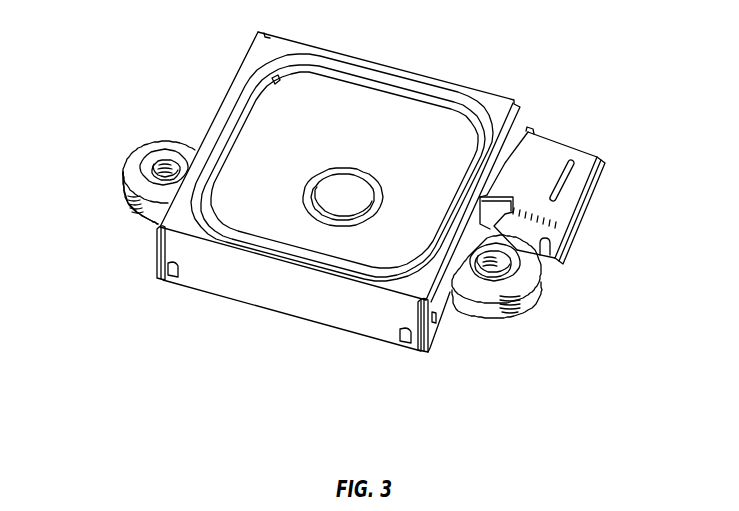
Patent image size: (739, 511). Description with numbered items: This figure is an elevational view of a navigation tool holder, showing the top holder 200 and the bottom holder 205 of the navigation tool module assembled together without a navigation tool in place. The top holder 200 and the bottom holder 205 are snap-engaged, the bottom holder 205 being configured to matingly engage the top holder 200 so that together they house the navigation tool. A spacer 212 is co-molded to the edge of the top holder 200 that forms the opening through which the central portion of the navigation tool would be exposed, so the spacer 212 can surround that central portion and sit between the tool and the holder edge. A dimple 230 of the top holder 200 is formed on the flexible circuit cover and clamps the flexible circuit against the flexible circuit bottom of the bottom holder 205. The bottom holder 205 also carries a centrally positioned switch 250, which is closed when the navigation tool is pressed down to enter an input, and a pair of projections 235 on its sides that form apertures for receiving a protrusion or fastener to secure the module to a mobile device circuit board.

The top holder 200 is at (267, 288).
The bottom holder 205 is at (126, 199).
The spacer 212 is at (247, 97).
The dimple 230 is at (573, 162).
The projections 235 is at (530, 290).
The switch 250 is at (352, 183).